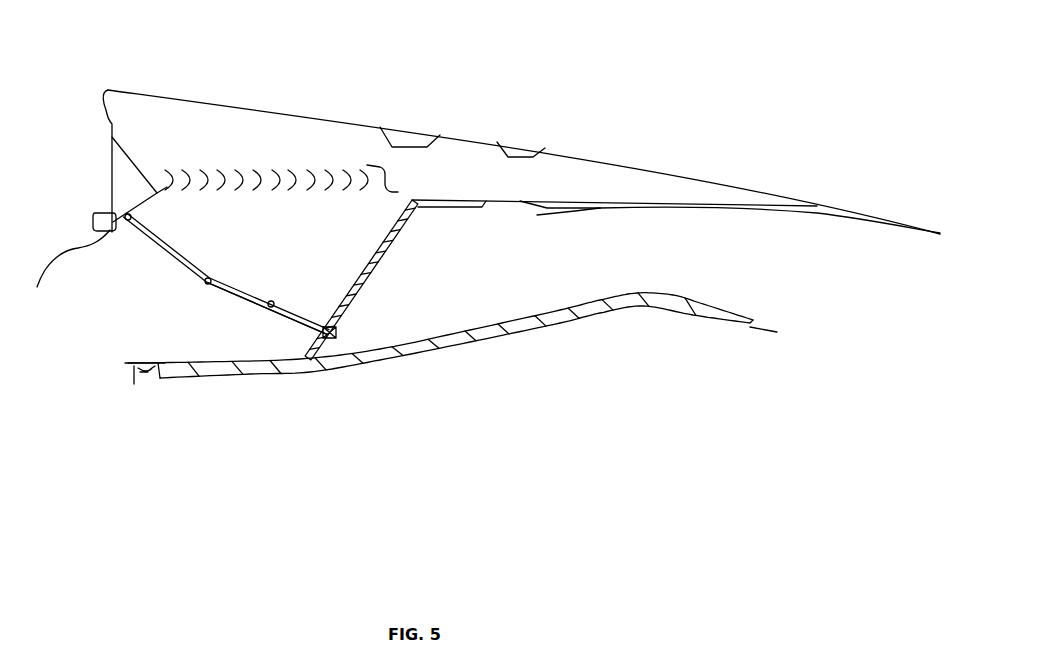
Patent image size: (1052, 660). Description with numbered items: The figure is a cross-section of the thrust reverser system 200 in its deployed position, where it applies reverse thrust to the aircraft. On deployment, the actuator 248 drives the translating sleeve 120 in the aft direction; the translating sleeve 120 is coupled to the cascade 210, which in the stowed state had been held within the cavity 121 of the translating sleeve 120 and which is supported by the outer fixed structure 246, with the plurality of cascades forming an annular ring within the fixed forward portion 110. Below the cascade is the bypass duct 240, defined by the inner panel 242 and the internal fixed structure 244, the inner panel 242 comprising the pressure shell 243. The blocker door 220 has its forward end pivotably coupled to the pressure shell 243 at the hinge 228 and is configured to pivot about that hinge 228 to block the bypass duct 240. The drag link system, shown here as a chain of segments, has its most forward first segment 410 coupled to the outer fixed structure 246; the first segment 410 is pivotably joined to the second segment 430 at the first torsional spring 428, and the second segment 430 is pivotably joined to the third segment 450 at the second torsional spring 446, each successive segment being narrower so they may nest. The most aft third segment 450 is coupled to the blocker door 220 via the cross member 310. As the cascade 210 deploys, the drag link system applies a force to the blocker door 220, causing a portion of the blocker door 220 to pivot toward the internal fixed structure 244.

The fixed forward portion 110 is at (193, 98).
The translating sleeve 120 is at (608, 159).
The cavity 121 is at (473, 150).
The thrust reverser system 200 is at (480, 83).
The cascade 210 is at (240, 175).
The blocker door 220 is at (353, 283).
The hinge 228 is at (416, 206).
The bypass duct 240 is at (148, 343).
The inner panel 242 is at (655, 211).
The pressure shell 243 is at (479, 209).
The internal fixed structure 244 is at (373, 364).
The outer fixed structure 246 is at (66, 276).
The actuator 248 is at (97, 213).
The cross member 310 is at (333, 333).
The first segment 410 is at (162, 255).
The first torsional spring 428 is at (208, 278).
The second segment 430 is at (240, 302).
The second torsional spring 446 is at (272, 301).
The third segment 450 is at (312, 325).